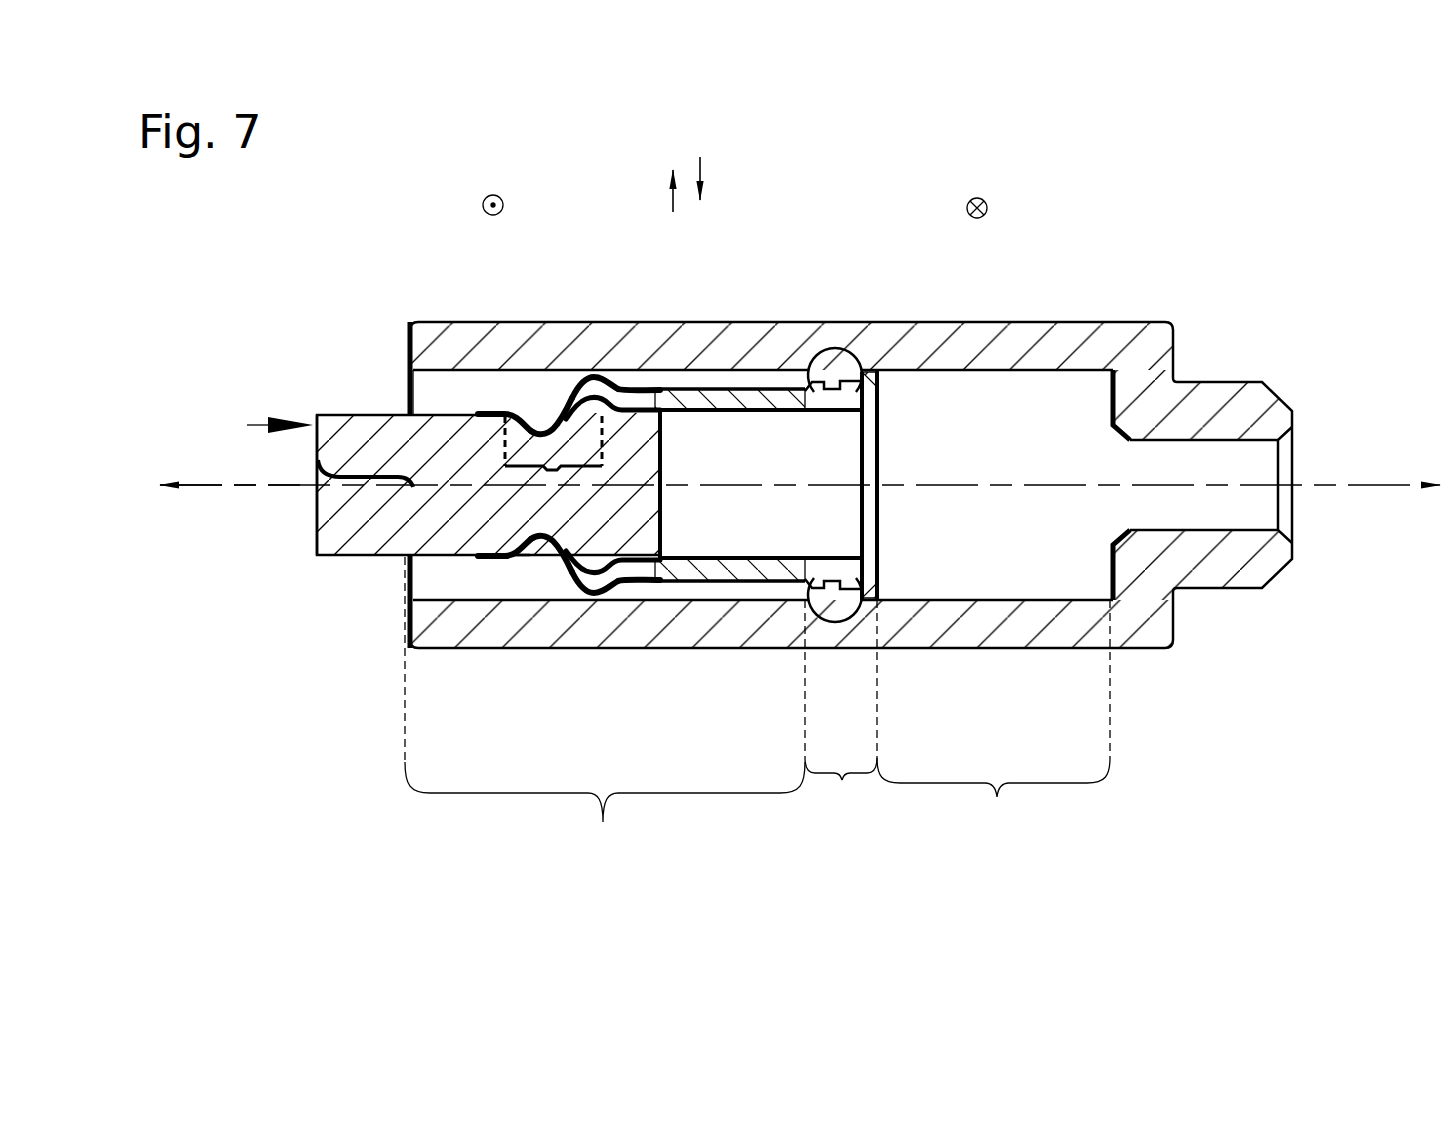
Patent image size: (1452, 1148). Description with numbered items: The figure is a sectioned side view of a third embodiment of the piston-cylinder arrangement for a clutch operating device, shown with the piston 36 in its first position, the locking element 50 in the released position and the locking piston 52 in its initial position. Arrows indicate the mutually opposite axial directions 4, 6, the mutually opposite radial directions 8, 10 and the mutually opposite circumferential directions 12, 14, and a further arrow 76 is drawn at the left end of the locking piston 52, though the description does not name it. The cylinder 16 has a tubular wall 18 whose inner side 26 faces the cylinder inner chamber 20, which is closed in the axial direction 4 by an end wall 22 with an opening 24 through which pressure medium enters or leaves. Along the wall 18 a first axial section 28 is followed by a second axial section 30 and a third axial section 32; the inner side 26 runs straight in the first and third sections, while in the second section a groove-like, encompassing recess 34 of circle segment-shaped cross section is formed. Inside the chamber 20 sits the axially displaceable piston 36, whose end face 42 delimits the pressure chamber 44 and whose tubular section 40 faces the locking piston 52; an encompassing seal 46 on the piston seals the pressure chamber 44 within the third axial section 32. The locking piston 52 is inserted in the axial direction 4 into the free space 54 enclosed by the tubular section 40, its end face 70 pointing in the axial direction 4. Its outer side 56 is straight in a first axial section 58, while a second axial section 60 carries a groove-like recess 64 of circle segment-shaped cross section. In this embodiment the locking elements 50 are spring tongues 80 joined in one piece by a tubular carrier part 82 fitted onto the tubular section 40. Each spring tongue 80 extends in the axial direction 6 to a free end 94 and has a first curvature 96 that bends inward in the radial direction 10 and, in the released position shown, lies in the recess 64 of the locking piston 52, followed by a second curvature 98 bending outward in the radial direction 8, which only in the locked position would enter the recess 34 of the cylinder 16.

The axial direction 4 is at (1397, 487).
The axial direction 6 is at (216, 487).
The radial direction 8 is at (673, 195).
The radial direction 10 is at (700, 173).
The circumferential direction 12 is at (502, 198).
The circumferential direction 14 is at (985, 200).
The cylinder 16 is at (910, 438).
The wall 18 is at (903, 343).
The cylinder inner chamber 20 is at (534, 580).
The end wall 22 is at (1145, 358).
The opening 24 is at (1220, 462).
The inner side 26 is at (531, 390).
The first axial section 28 is at (605, 713).
The second axial section 30 is at (841, 708).
The third axial section 32 is at (993, 718).
The recess 34 is at (834, 359).
The piston 36 is at (794, 606).
The tubular section 40 is at (774, 396).
The end face 42 is at (872, 570).
The pressure chamber 44 is at (1085, 485).
The seal 46 is at (879, 421).
The locking element 50 is at (513, 502).
The locking piston 52 is at (329, 568).
The free space 54 is at (812, 555).
The outer side 56 is at (465, 503).
The first axial section 58 is at (403, 499).
The second axial section 60 is at (486, 574).
The recess 64 is at (509, 538).
The end face 70 is at (668, 531).
The actuating force 76 is at (247, 423).
The spring tongue 80 is at (513, 502).
The carrier part 82 is at (711, 386).
The free end 94 is at (471, 404).
The first curvature 96 is at (547, 412).
The second curvature 98 is at (597, 366).